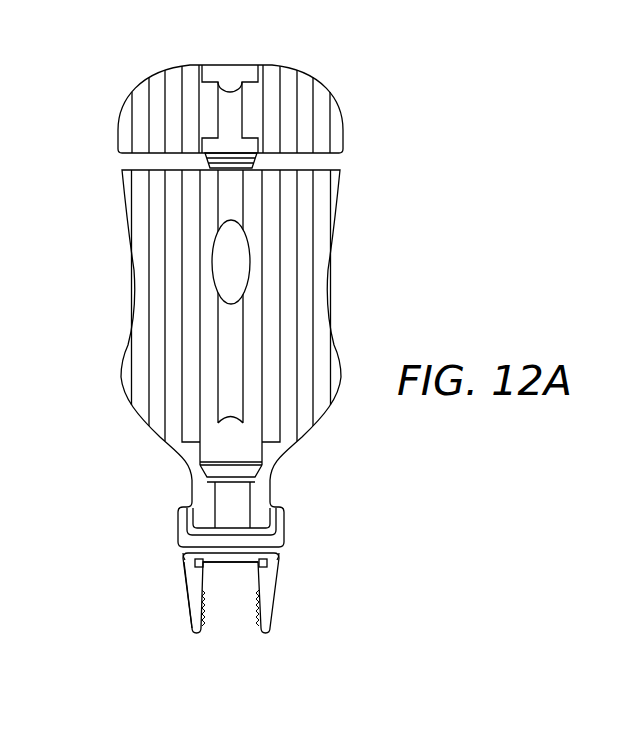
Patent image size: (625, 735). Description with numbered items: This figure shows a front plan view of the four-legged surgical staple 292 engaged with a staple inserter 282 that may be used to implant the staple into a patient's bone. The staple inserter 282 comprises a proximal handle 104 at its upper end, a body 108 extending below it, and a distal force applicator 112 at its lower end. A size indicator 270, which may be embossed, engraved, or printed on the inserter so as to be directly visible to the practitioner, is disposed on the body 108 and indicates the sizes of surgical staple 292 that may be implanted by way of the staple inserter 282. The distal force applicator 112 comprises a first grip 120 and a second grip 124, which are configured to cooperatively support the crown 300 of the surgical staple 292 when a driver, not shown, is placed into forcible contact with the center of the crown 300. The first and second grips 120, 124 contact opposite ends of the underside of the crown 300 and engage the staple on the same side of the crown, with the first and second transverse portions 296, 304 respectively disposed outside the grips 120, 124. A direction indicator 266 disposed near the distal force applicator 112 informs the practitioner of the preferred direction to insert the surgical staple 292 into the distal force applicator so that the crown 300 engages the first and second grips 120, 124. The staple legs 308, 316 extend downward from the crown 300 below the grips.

The staple inserter 282 is at (147, 51).
The proximal handle 104 is at (298, 70).
The body 108 is at (135, 260).
The size indicator 270 is at (230, 262).
The distal force applicator 112 is at (302, 517).
The direction indicator 266 is at (178, 520).
The first transverse portion 296 is at (184, 557).
The second transverse portion 304 is at (278, 557).
The first grip 120 is at (197, 563).
The second grip 124 is at (266, 567).
The surgical staple 292 is at (178, 614).
The first tooth tip 308 is at (193, 632).
The second tooth tip 316 is at (270, 630).
The crown 300 is at (232, 553).